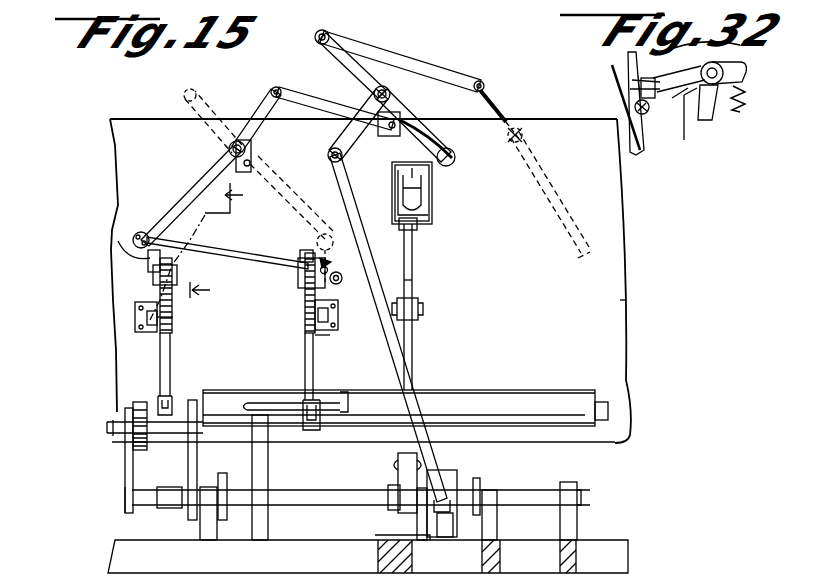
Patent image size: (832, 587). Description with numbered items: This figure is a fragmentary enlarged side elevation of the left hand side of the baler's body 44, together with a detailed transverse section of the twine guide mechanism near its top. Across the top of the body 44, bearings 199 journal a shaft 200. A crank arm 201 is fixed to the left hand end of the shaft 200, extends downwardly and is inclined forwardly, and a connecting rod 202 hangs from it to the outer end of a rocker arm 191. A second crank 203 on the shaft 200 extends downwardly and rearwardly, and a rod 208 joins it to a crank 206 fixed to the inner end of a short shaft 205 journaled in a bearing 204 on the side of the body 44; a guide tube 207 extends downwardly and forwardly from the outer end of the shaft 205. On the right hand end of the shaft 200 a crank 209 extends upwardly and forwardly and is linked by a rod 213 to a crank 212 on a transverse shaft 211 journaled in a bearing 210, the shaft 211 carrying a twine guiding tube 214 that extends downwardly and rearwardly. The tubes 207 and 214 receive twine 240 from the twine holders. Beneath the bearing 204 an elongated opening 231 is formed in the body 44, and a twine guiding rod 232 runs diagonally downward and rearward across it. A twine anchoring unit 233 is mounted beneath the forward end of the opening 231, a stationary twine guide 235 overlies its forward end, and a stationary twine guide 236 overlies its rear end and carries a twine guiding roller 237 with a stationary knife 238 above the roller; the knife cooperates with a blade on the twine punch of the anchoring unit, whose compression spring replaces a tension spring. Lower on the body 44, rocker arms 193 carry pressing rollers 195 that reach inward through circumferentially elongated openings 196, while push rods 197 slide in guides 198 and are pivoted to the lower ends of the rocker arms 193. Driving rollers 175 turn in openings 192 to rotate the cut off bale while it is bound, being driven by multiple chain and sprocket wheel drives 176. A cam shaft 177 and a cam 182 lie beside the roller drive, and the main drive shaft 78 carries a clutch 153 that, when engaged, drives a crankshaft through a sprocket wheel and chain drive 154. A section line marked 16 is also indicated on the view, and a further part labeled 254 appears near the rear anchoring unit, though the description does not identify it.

In FIG. 15, the section line 16 is at (210, 251).
In FIG. 15, the body 44 is at (613, 322).
In FIG. 15, the main drive shaft 78 is at (118, 445).
In FIG. 15, the clutch 153 is at (139, 393).
In FIG. 15, the sprocket wheel and chain drive 154 is at (125, 488).
In FIG. 15, the driving rollers 175 is at (352, 400).
In FIG. 15, the multiple chain and sprocket wheel drives 176 is at (192, 461).
In FIG. 15, the cam shaft 177 is at (178, 392).
In FIG. 15, the cam 182 is at (398, 462).
In FIG. 15, the rocker arm 191 is at (442, 538).
In FIG. 15, the openings 192 is at (442, 395).
In FIG. 15, the rocker arms 193 is at (432, 196).
In FIG. 15, the pressing rollers 195 is at (396, 164).
In FIG. 15, the circumferentially elongated openings 196 is at (432, 178).
In FIG. 15, the push rods 197 is at (414, 272).
In FIG. 15, the guides 198 is at (440, 295).
In FIG. 15, the bearings 199 is at (405, 110).
In FIG. 15, the shaft 200 is at (388, 86).
In FIG. 15, the crank arm 201 is at (345, 137).
In FIG. 15, the connecting rod 202 is at (381, 300).
In FIG. 15, the second crank 203 is at (458, 150).
In FIG. 15, the bearing 204 is at (252, 153).
In FIG. 15, the short shaft 205 is at (229, 153).
In FIG. 15, the crank 206 is at (272, 90).
In FIG. 15, the guide tube 207 is at (204, 190).
In FIG. 15, the rod 208 is at (330, 86).
In FIG. 15, the crank 209 is at (352, 62).
In FIG. 15, the bearing 210 is at (525, 136).
In FIG. 15, the shaft 211 is at (522, 132).
In FIG. 15, the crank 212 is at (495, 104).
In FIG. 15, the rod 213 is at (452, 75).
In FIG. 15, the twine guiding tube 214 is at (575, 240).
In FIG. 15, the opening 231 is at (232, 252).
In FIG. 15, the twine guiding rod 232 is at (262, 290).
In FIG. 32, the twine guiding rod 232 is at (645, 114).
In FIG. 15, the twine anchoring unit 233 is at (154, 342).
In FIG. 15, the stationary twine guide 235 is at (133, 240).
In FIG. 15, the stationary twine guide 236 is at (330, 266).
In FIG. 32, the stationary twine guide 236 is at (632, 68).
In FIG. 32, the twine guiding roller 237 is at (710, 62).
In FIG. 15, the stationary knife 238 is at (325, 260).
In FIG. 32, the stationary knife 238 is at (736, 75).
In FIG. 15, the twine 240 is at (326, 232).
In FIG. 15, the block 254 is at (322, 344).